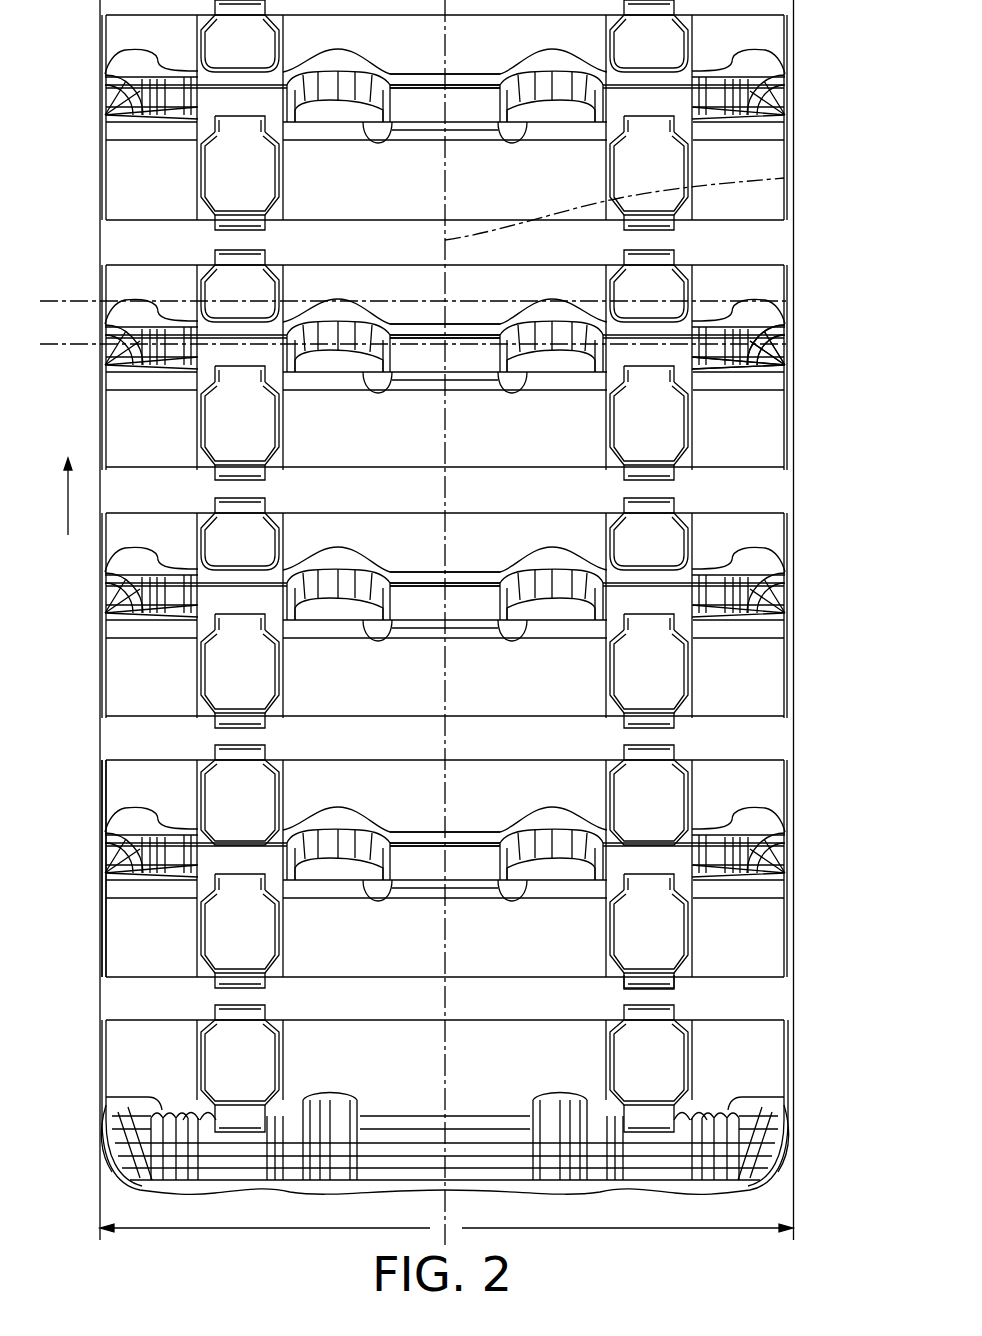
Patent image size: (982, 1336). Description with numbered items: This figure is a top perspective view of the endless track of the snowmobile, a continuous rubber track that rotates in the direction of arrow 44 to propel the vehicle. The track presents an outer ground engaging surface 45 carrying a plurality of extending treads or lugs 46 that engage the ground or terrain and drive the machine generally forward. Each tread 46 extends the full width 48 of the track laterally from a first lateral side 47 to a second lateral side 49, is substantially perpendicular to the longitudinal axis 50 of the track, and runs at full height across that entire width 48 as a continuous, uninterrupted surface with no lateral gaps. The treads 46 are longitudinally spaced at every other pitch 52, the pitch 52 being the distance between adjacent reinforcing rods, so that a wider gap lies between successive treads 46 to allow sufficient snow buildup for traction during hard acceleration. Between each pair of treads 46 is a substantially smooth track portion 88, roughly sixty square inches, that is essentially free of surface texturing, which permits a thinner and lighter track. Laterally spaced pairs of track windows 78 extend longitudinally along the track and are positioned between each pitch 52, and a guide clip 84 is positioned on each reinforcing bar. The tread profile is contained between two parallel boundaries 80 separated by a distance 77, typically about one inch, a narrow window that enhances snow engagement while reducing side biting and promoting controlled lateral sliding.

The direction arrow 44 is at (68, 535).
The outer ground engaging surface 45 is at (130, 938).
The tread 46 is at (752, 565).
The first lateral side 47 is at (97, 1050).
The full width 48 is at (446, 1228).
The second lateral side 49 is at (795, 1058).
The longitudinal axis 50 is at (795, 178).
The pitch 52 is at (780, 737).
The distance between parallel boundaries 77 is at (42, 262).
The track window 78 is at (655, 935).
The parallel boundary 80 is at (793, 350).
The guide clip 84 is at (650, 978).
The smooth track portion 88 is at (310, 670).